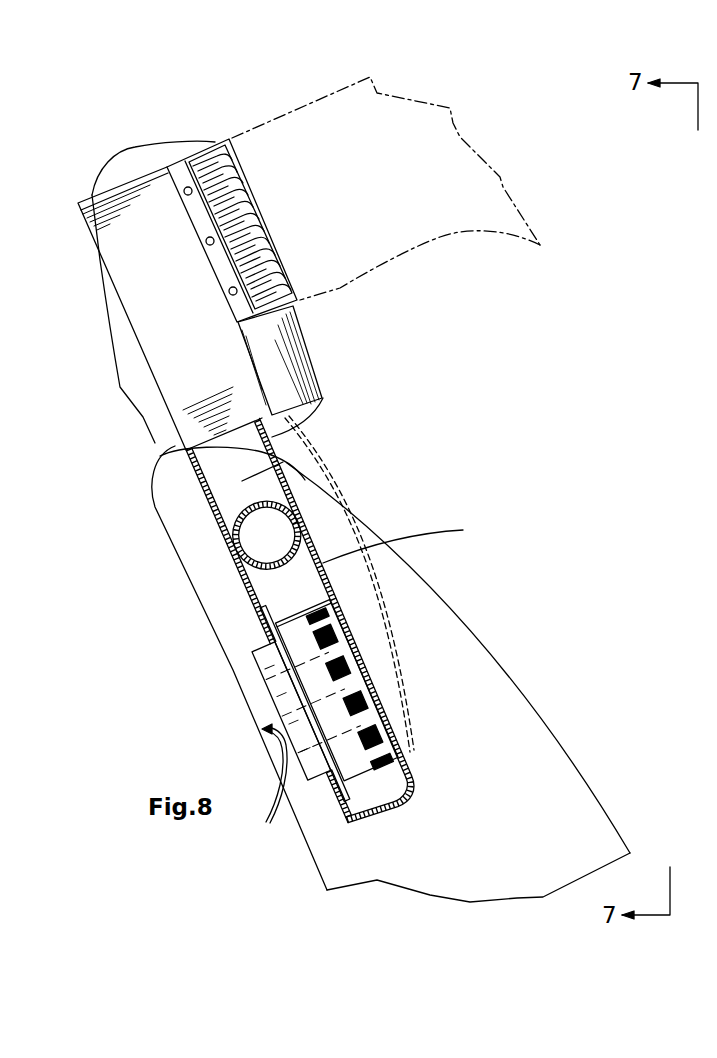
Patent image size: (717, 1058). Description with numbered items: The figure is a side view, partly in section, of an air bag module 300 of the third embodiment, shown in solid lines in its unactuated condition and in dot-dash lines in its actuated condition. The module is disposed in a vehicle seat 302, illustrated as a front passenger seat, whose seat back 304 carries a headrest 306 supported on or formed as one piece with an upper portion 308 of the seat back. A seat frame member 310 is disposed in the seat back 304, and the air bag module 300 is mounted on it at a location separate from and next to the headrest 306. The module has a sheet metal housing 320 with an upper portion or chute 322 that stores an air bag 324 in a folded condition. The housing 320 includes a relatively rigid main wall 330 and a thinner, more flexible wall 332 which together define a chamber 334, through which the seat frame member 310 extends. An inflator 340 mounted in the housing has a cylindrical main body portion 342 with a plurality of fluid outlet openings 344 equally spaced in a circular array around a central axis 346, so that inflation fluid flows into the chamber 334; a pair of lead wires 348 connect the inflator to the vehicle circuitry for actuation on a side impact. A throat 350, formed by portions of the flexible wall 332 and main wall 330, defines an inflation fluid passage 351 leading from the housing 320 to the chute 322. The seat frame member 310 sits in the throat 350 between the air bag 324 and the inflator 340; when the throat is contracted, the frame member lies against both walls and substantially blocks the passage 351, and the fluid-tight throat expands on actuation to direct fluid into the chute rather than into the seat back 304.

The air bag module 300 is at (364, 646).
The vehicle seat 302 is at (602, 797).
The seat back 304 is at (560, 738).
The headrest 306 is at (130, 398).
The upper portion of the seat back 308 is at (160, 510).
The seat frame member 310 is at (217, 513).
The housing 320 is at (347, 826).
The chute 322 is at (313, 357).
The air bag 324 is at (287, 267).
The main wall 330 is at (245, 594).
The flexible wall 332 is at (463, 530).
The chamber 334 is at (312, 600).
The inflator 340 is at (268, 697).
The cylindrical main body portion 342 is at (370, 717).
The fluid outlet openings 344 is at (336, 665).
The central axis 346 is at (415, 662).
The lead wires 348 is at (265, 787).
The throat 350 is at (320, 537).
The inflation fluid passage 351 is at (283, 462).